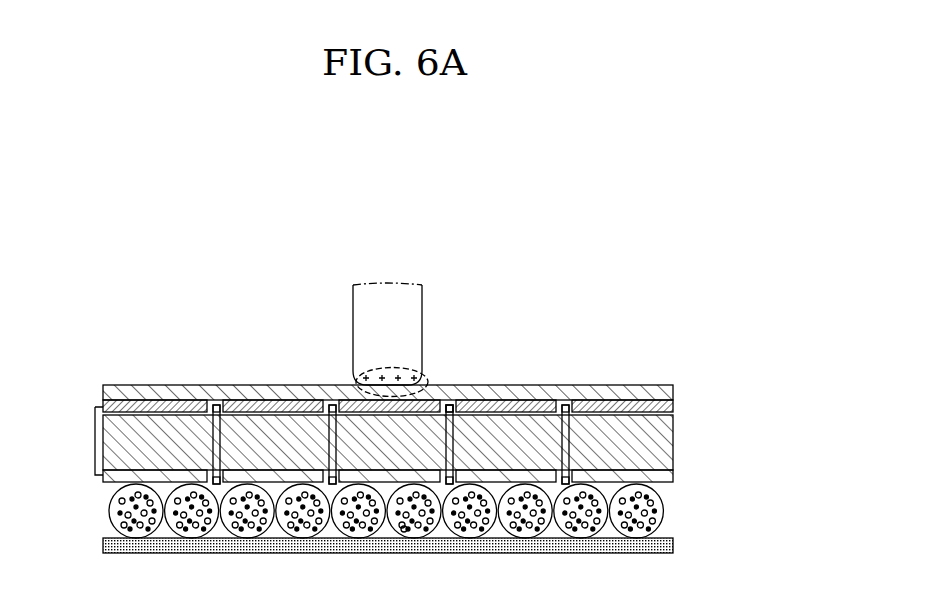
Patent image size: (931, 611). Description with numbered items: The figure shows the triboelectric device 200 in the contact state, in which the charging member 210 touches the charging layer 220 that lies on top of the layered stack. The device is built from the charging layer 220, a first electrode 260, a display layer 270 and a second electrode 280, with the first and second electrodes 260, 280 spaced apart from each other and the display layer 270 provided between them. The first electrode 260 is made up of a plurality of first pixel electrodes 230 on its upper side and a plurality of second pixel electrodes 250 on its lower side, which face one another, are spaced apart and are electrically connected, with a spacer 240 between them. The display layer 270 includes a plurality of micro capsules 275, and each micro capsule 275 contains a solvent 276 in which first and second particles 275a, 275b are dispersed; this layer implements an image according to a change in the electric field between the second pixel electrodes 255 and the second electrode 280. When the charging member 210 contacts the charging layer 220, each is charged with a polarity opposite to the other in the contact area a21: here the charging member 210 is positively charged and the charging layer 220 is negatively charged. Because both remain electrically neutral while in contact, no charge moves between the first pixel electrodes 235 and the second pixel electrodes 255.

The triboelectric device 200 is at (692, 296).
The charging member 210 is at (422, 302).
The contact area a21 is at (350, 383).
The charging layer 220 is at (674, 390).
The first pixel electrodes 230 is at (680, 408).
The first pixel electrodes 235 is at (440, 406).
The spacer 240 is at (675, 445).
The second pixel electrodes 250 is at (680, 475).
The second pixel electrodes 255 is at (437, 481).
The first electrode 260 is at (455, 466).
The display layer 270 is at (435, 540).
The micro capsules 275 is at (342, 536).
The first particles 275a is at (403, 533).
The second particles 275b is at (438, 531).
The solvent 276 is at (195, 537).
The second electrode 280 is at (675, 548).